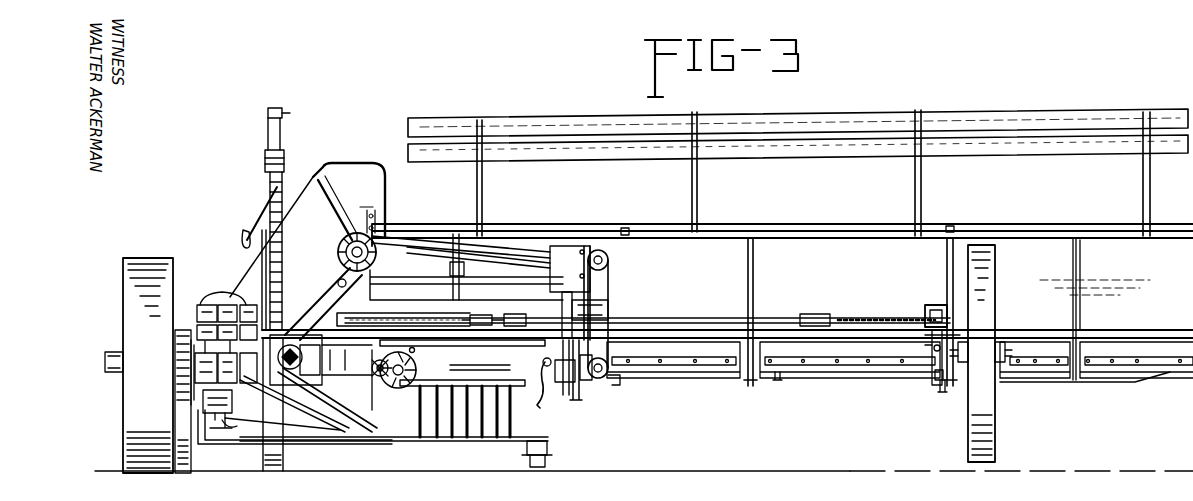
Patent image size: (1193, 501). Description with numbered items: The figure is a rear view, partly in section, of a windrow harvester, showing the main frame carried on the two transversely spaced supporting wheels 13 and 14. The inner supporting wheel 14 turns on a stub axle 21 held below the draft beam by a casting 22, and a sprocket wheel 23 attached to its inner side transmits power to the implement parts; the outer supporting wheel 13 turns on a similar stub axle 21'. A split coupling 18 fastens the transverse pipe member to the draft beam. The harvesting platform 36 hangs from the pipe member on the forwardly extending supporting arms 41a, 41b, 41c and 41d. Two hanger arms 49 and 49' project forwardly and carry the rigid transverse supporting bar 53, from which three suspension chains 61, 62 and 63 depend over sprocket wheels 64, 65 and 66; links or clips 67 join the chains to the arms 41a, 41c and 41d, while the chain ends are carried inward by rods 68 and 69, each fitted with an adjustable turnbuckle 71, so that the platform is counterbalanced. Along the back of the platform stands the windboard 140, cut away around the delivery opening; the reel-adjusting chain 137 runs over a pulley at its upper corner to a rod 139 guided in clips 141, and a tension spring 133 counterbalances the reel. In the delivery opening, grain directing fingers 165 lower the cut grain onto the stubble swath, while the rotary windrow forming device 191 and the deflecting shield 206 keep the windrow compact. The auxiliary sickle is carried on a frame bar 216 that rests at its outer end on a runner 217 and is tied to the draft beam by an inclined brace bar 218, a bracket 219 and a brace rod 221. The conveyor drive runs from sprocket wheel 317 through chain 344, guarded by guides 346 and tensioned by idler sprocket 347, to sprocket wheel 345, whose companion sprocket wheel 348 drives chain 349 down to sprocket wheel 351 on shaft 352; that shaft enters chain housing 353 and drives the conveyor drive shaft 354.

The outer supporting wheel 13 is at (982, 458).
The inner supporting wheel 14 is at (125, 273).
The split coupling 18 is at (200, 312).
The stub axle 21 is at (168, 401).
The casting 22 is at (176, 376).
The sprocket wheel 23 is at (180, 398).
The stub axle 21' is at (993, 345).
The harvesting platform 36 is at (1096, 371).
The platform supporting arm 41a is at (942, 382).
The platform supporting arm 41b is at (777, 380).
The platform supporting arm 41c is at (578, 400).
The platform supporting arm 41d is at (411, 388).
The hanger arm 49 is at (934, 304).
The hanger arm 49' is at (607, 302).
The supporting bar 53 is at (829, 332).
The chain 61 is at (937, 351).
The chain 62 is at (580, 351).
The chain 63 is at (366, 387).
The sprocket wheel 64 is at (932, 340).
The sprocket wheel 65 is at (565, 345).
The sprocket wheel 66 is at (368, 327).
The link or clip 67 is at (940, 380).
The rod 68 is at (852, 319).
The rod 69 is at (483, 309).
The adjustable turnbuckle 71 is at (812, 314).
The tension spring 133 is at (1192, 298).
The chain 137 is at (1170, 225).
The rod 139 is at (1062, 225).
The back windboard 140 is at (840, 247).
The clips 141 is at (626, 229).
The grain supporting and directing fingers 165 is at (482, 438).
The windrow forming device 191 is at (416, 388).
The deflecting shield 206 is at (541, 406).
The frame bar 216 is at (430, 441).
The runner 217 is at (540, 467).
The inclined brace bar 218 is at (308, 424).
The bracket 219 is at (208, 446).
The brace rod 221 is at (350, 420).
The sprocket wheel 317 is at (695, 367).
The chain 344 is at (396, 252).
The sprocket wheel 345 is at (609, 268).
The guides or guards 346 is at (503, 262).
The idler sprocket 347 is at (430, 284).
The sprocket wheel 348 is at (588, 252).
The chain 349 is at (608, 311).
The sprocket wheel 351 is at (608, 372).
The shaft 352 is at (598, 379).
The chain housing 353 is at (579, 380).
The conveyor drive shaft 354 is at (545, 368).